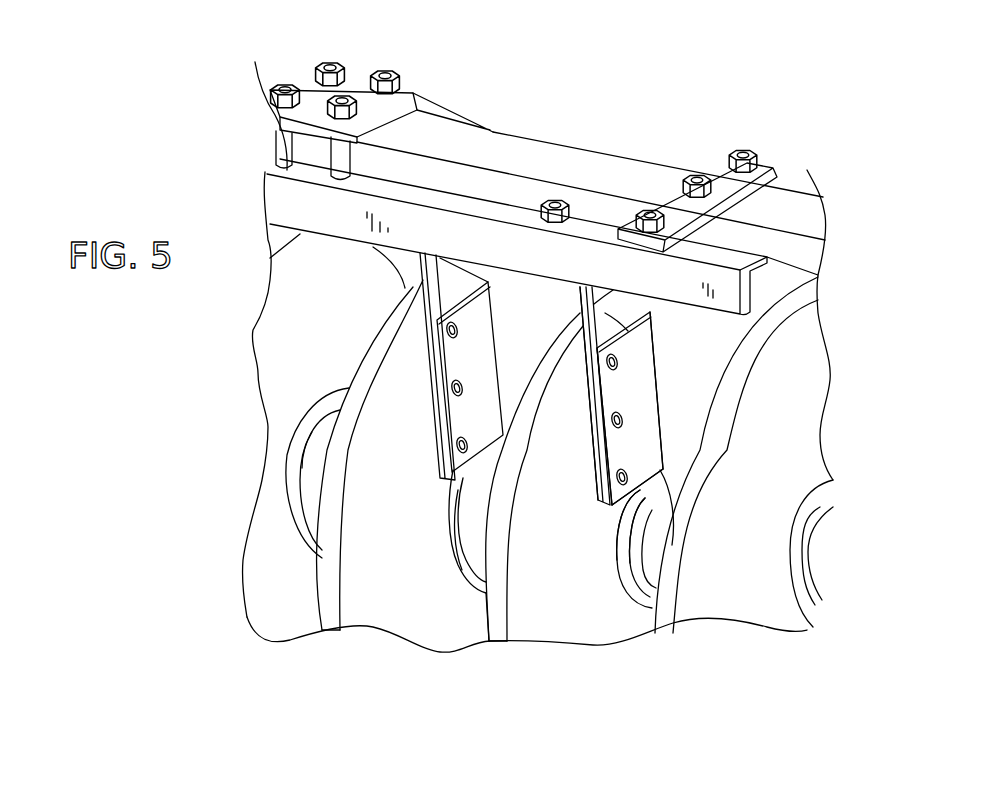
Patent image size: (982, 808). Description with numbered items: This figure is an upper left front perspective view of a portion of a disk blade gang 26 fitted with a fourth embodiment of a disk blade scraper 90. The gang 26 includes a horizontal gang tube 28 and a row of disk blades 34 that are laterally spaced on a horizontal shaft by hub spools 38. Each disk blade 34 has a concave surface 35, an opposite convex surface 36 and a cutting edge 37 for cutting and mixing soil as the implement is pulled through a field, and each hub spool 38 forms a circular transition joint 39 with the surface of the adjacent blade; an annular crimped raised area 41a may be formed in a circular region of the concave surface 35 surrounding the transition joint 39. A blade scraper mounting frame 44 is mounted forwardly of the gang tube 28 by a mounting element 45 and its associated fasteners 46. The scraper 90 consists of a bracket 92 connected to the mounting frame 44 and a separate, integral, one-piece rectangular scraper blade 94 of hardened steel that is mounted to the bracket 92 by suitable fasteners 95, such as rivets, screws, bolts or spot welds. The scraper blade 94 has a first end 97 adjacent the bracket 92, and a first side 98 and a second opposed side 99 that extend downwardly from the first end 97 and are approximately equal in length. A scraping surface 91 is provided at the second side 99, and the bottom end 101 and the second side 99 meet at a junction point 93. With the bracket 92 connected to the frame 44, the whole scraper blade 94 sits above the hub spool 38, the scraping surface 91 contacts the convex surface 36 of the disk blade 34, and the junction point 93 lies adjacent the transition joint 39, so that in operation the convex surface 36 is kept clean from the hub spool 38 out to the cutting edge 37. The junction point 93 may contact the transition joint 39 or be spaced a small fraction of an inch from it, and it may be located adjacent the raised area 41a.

The disk blade gang 26 is at (172, 455).
The horizontal gang tube 28 is at (570, 160).
The disk blade 34 is at (352, 615).
The concave surface 35 is at (342, 350).
The convex surface 36 is at (387, 485).
The cutting edge 37 is at (483, 617).
The hub spool 38 is at (310, 492).
The circular transition joint 39 is at (668, 447).
The annular crimped raised area 41a is at (462, 513).
The blade scraper mounting frame 44 is at (272, 206).
The mounting element 45 is at (722, 178).
The fasteners 46 is at (757, 162).
The disk blade scraper 90 is at (600, 527).
The scraping surface 91 is at (652, 438).
The bracket 92 is at (592, 295).
The junction point 93 is at (656, 480).
The scraper blade 94 is at (660, 365).
The fasteners 95 is at (608, 365).
The first end 97 is at (628, 310).
The first side 98 is at (597, 403).
The second side 99 is at (662, 397).
The bottom end 101 is at (645, 548).